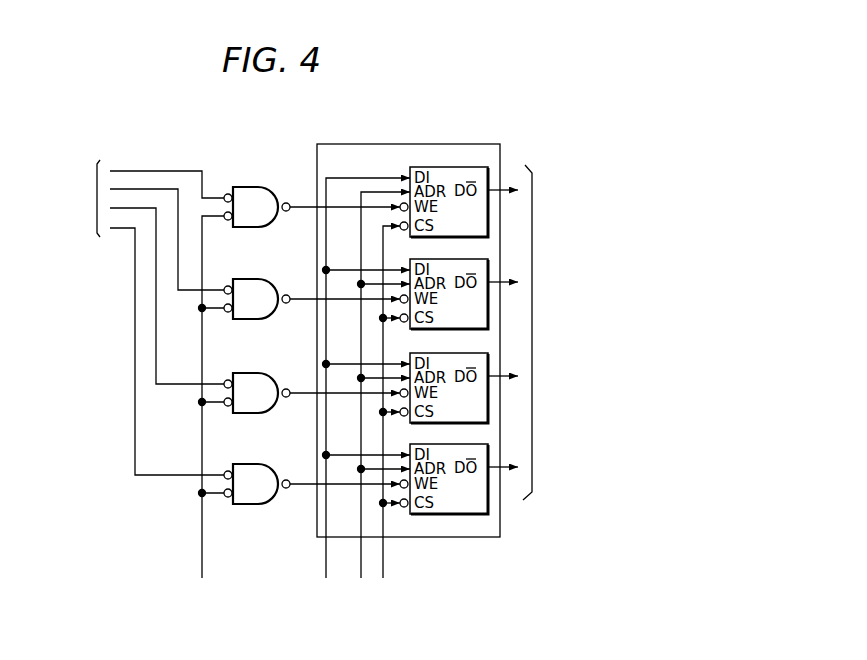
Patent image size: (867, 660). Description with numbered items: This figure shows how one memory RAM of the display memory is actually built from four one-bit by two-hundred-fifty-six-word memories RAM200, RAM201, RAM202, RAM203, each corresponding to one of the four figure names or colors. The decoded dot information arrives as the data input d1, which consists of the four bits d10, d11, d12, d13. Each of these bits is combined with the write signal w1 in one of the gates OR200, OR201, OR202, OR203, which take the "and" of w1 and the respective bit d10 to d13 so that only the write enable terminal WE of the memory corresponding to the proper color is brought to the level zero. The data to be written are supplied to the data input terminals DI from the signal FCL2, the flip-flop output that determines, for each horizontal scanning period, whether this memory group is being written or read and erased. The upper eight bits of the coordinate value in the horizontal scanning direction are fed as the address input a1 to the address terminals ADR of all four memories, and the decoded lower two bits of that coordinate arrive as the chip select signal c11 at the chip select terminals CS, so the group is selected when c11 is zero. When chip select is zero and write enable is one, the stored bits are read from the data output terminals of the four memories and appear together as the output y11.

The data input d1 is at (85, 198).
The data bit d10 is at (167, 175).
The data bit d11 is at (167, 230).
The data bit d12 is at (167, 287).
The data bit d13 is at (167, 342).
The write signal w1 is at (207, 410).
The NOR gate OR200 is at (262, 187).
The NOR gate OR201 is at (251, 279).
The NOR gate OR202 is at (262, 373).
The NOR gate OR203 is at (258, 464).
The memory RAM RAM200 is at (489, 167).
The memory RAM RAM201 is at (490, 259).
The memory RAM RAM202 is at (490, 353).
The memory RAM RAM203 is at (490, 444).
The output signal of flip-flop TFF 20 FCL2 is at (354, 391).
The address input a1 is at (381, 399).
The chip select signal c11 is at (389, 416).
The data output y11 is at (542, 332).